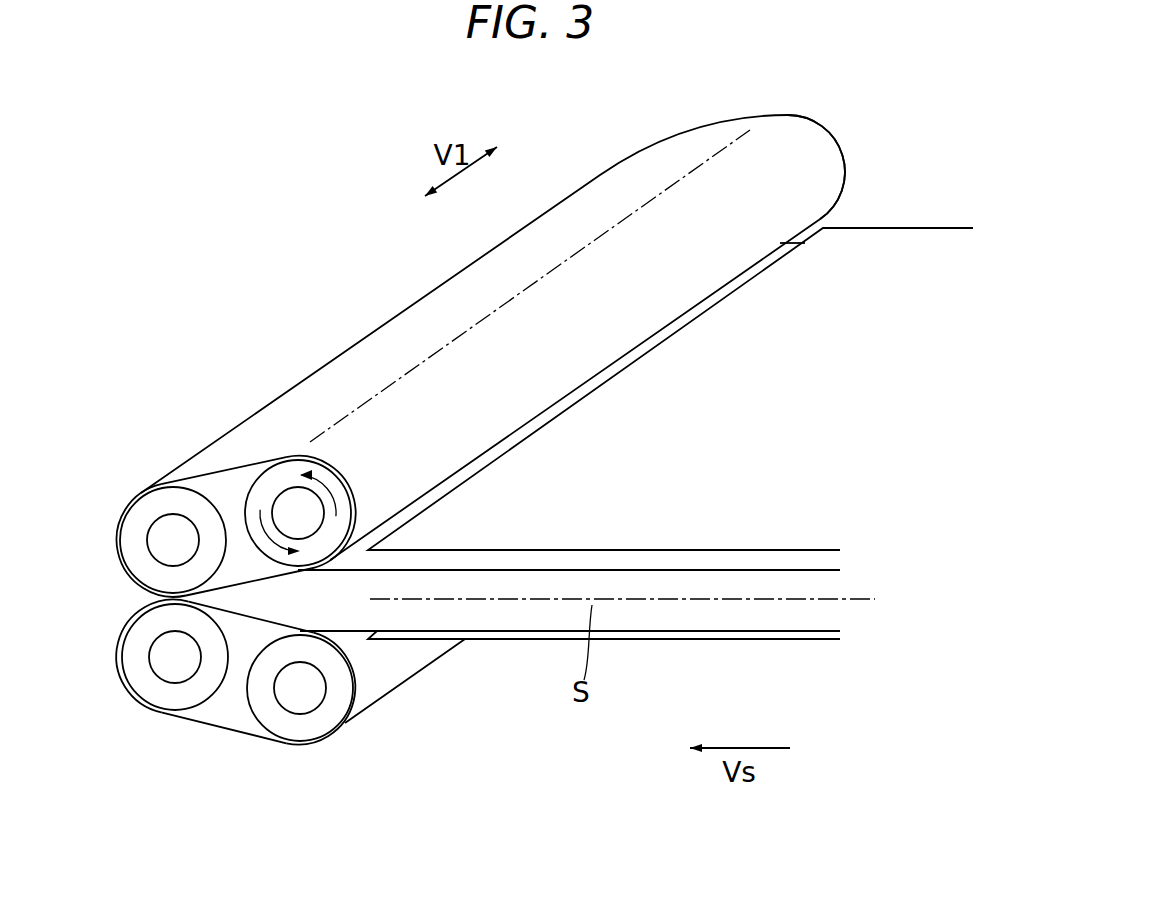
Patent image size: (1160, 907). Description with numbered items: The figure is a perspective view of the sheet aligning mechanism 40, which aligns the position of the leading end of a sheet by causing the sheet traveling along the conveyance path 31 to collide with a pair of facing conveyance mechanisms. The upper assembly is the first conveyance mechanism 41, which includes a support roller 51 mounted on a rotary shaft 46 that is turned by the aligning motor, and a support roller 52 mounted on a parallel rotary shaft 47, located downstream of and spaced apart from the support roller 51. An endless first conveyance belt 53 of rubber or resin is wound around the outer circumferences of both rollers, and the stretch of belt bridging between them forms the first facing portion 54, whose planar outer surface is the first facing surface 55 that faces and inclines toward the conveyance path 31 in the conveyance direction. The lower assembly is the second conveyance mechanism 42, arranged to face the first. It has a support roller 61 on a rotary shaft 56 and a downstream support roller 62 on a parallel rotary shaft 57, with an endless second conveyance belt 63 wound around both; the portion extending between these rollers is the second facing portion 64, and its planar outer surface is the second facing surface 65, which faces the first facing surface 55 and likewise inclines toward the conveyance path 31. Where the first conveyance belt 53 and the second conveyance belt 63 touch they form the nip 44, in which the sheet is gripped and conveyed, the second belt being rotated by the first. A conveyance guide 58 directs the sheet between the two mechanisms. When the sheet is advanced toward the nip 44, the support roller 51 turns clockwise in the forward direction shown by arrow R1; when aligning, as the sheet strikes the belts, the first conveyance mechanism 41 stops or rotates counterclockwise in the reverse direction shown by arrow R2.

The sheet aligning mechanism 40 is at (858, 96).
The first conveyance mechanism 41 is at (855, 167).
The second conveyance mechanism 42 is at (335, 752).
The nip 44 is at (166, 600).
The rotary shaft 46 is at (312, 475).
The rotary shaft 47 is at (183, 520).
The support roller 51 is at (265, 497).
The support roller 52 is at (145, 515).
The first conveyance belt 53 is at (434, 317).
The first facing portion 54 is at (245, 568).
The first facing surface 55 is at (292, 600).
The rotary shaft 56 is at (290, 714).
The rotary shaft 57 is at (156, 680).
The conveyance guide 58 is at (905, 228).
The support roller 61 is at (340, 693).
The support roller 62 is at (141, 643).
The second conveyance belt 63 is at (202, 724).
The second facing portion 64 is at (242, 612).
The second facing surface 65 is at (258, 615).
The conveyance path 31 is at (857, 605).
The arrow R1 is at (352, 566).
The arrow R2 is at (328, 484).